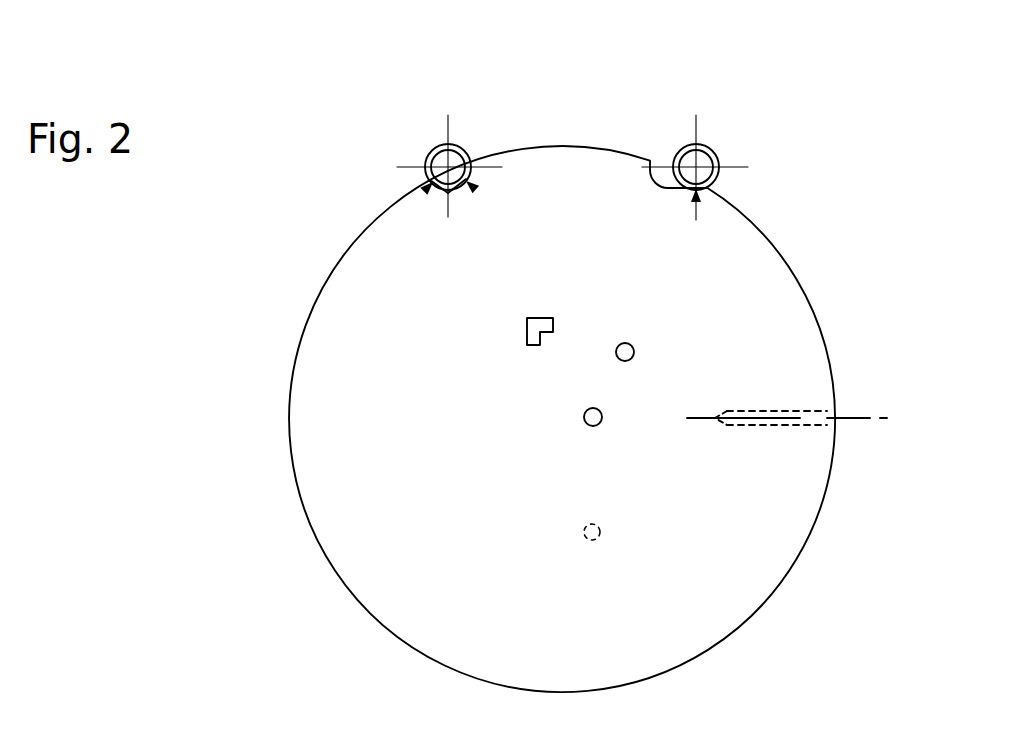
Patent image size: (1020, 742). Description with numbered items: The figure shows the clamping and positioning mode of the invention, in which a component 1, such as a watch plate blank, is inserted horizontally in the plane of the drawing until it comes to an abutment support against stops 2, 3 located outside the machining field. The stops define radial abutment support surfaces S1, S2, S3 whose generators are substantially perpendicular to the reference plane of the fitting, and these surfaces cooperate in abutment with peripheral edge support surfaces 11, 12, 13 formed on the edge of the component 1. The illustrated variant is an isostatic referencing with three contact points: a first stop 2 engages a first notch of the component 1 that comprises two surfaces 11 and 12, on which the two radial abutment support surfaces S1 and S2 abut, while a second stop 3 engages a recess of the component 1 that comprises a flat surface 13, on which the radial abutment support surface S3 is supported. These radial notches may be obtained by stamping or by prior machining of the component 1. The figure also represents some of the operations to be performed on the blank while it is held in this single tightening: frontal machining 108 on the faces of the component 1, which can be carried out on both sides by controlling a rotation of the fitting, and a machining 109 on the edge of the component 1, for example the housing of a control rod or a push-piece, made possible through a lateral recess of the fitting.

The component 1 is at (320, 427).
The first stop 2 is at (463, 107).
The second stop 3 is at (664, 132).
The peripheral edge support surface 11 is at (440, 161).
The peripheral edge support surface 12 is at (482, 147).
The flat surface 13 is at (696, 175).
The radial abutment support surface S1 is at (424, 191).
The radial abutment support surface S2 is at (476, 190).
The radial abutment support surface S3 is at (696, 202).
The frontal machining 108 is at (553, 323).
The machining 109 is at (780, 412).